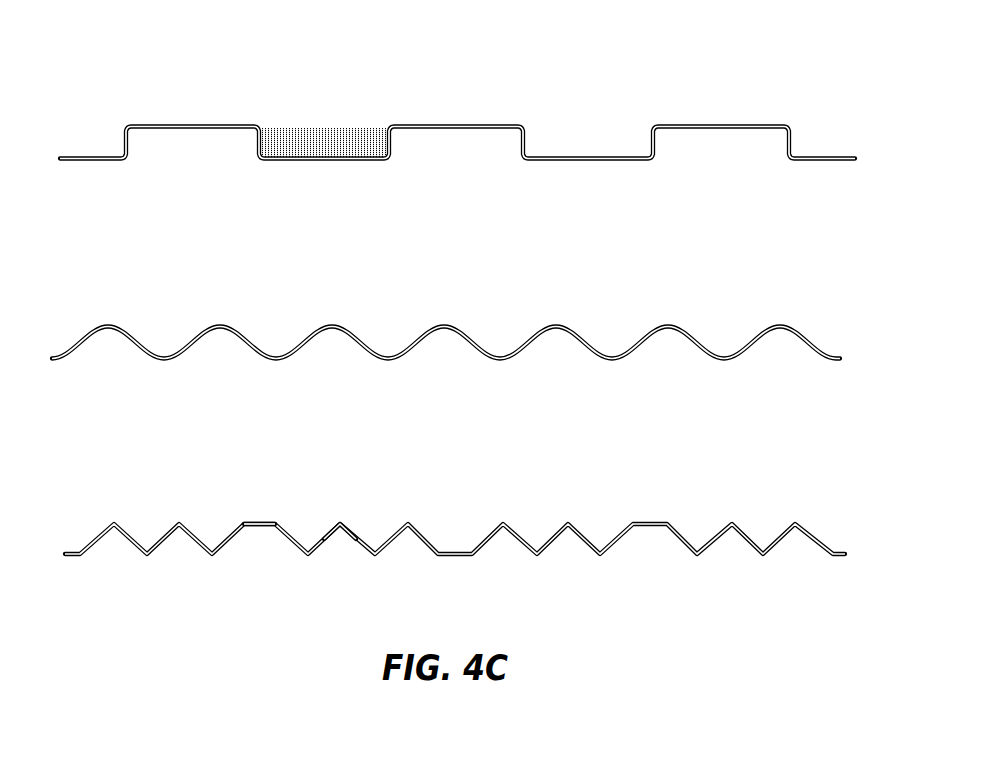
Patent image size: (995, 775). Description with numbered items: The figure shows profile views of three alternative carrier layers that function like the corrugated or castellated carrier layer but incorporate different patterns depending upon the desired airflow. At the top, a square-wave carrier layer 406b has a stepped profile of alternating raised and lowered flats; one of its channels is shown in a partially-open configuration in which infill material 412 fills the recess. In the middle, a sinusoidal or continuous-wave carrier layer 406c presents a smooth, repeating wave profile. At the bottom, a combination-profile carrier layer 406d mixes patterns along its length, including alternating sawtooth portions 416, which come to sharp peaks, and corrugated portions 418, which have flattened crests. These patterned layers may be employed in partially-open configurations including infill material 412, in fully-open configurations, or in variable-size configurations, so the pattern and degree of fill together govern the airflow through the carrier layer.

The square-wave carrier layer 406b is at (97, 77).
The sinusoidal or continuous-wave carrier layer 406c is at (102, 270).
The combination-profile carrier layer 406d is at (120, 451).
The infill material 412 is at (323, 147).
The sawtooth portion 416 is at (340, 522).
The corrugated portion 418 is at (262, 521).